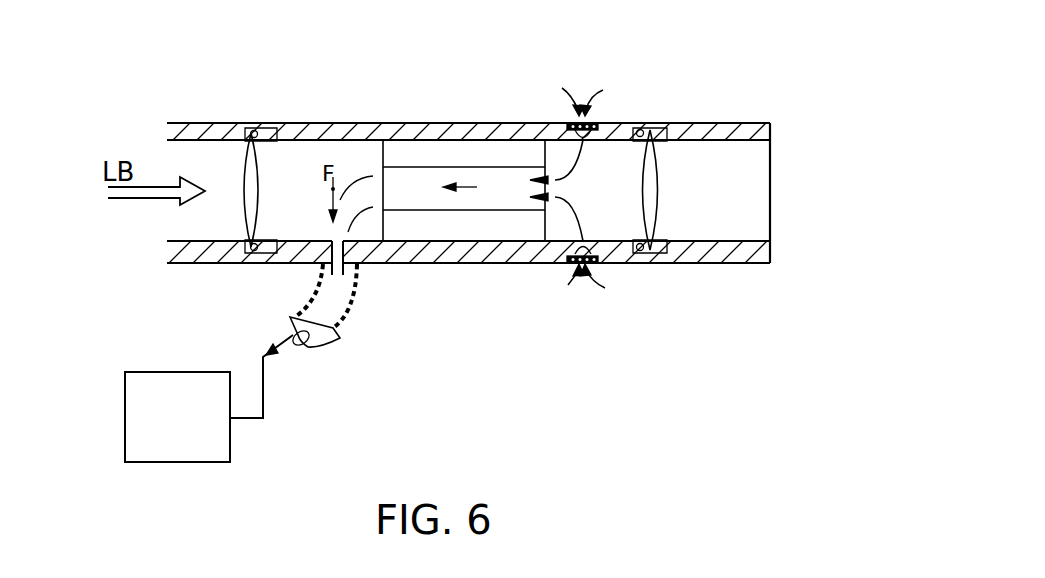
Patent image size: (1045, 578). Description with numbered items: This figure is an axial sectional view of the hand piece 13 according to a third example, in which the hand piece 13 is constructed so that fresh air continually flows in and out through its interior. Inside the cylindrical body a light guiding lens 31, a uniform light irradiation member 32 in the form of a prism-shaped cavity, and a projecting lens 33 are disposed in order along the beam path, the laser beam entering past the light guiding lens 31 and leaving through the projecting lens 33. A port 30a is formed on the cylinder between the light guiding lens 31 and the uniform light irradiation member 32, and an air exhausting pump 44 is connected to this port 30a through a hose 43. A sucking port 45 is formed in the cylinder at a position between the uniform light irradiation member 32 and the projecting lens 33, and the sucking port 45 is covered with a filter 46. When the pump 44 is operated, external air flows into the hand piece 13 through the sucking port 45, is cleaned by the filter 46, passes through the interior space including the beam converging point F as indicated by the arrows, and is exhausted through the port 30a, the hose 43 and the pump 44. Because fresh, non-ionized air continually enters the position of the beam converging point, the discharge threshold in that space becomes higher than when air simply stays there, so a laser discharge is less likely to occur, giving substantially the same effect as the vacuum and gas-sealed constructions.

The hand piece 13 is at (338, 118).
The light guiding lens 31 is at (238, 165).
The uniform light irradiation member 32 is at (437, 152).
The projecting lens 33 is at (667, 167).
The sucking port 45 is at (597, 150).
The filter 46 is at (570, 121).
The port 30a is at (352, 305).
The hose 43 is at (267, 400).
The air exhausting pump 44 is at (127, 370).